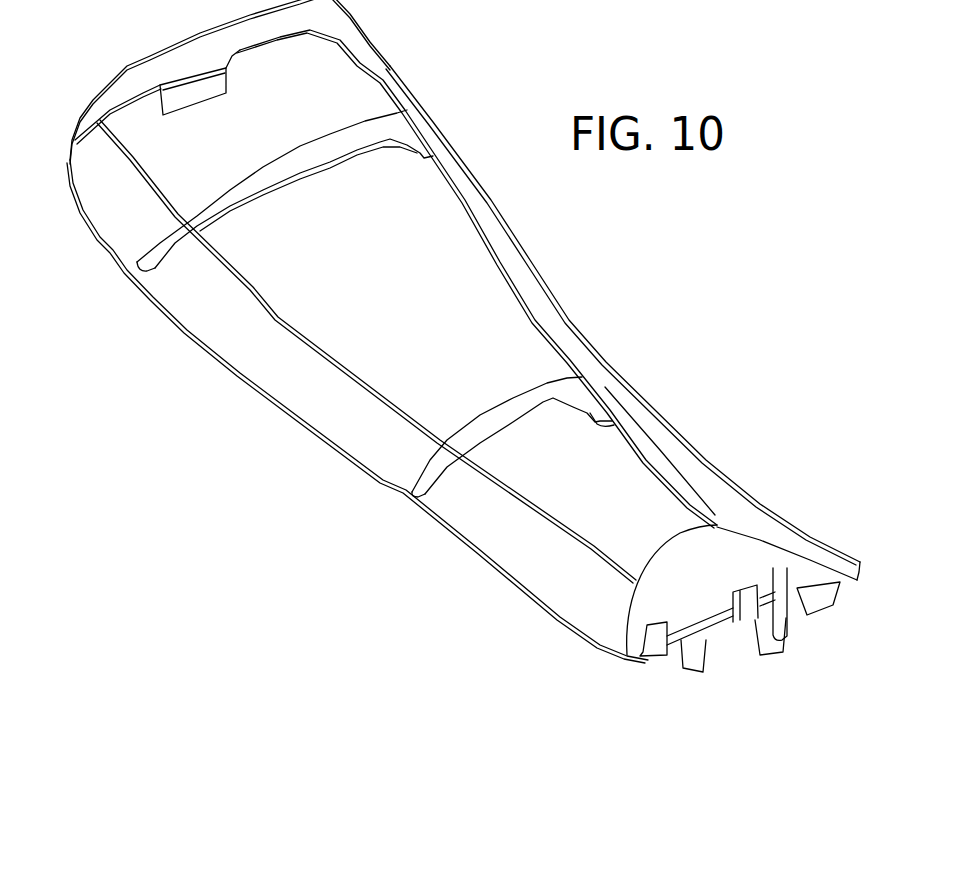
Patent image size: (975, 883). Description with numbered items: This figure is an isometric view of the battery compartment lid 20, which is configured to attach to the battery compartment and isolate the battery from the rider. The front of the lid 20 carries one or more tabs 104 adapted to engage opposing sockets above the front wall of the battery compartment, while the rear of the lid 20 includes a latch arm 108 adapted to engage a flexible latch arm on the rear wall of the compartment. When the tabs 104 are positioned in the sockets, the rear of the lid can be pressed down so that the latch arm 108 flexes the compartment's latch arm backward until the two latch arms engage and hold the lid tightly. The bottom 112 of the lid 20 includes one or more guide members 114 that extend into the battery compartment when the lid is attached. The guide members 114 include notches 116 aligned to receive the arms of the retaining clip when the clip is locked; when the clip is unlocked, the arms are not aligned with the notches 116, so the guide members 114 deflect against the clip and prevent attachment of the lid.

The battery compartment lid 20 is at (520, 254).
The tabs 104 is at (828, 598).
The latch arm 108 is at (179, 96).
The bottom 112 is at (427, 319).
The guide members 114 is at (736, 567).
The notches 116 is at (745, 590).